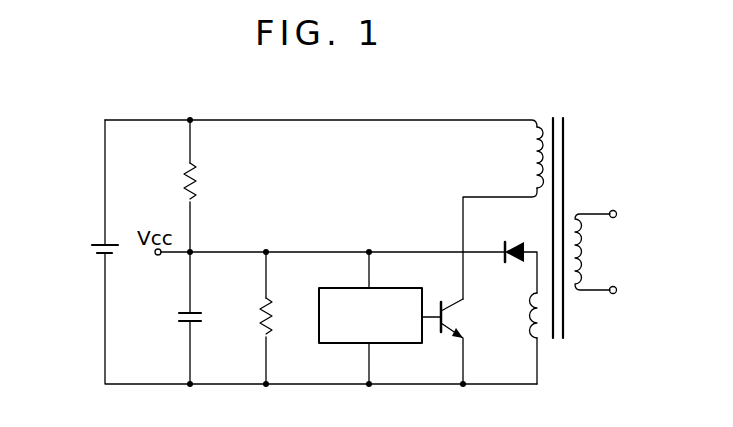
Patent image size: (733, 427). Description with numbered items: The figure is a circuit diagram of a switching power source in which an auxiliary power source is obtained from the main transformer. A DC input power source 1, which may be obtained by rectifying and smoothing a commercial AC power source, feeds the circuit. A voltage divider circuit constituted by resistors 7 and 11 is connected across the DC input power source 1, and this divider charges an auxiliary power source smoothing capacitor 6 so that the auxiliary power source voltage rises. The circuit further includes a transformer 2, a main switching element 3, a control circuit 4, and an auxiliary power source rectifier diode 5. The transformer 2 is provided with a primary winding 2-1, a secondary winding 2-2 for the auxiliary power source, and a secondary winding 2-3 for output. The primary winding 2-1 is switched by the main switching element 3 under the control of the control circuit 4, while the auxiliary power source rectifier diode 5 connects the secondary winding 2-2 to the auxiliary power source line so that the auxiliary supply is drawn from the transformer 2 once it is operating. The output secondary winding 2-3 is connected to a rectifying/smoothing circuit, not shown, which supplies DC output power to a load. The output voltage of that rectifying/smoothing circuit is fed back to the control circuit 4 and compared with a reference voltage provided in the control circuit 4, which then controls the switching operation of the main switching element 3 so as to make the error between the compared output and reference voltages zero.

The DC input power source 1 is at (93, 249).
The transformer 2 is at (560, 114).
The primary winding 2-1 is at (540, 116).
The secondary winding for the auxiliary power source 2-2 is at (541, 341).
The secondary winding for output 2-3 is at (583, 296).
The main switching element 3 is at (457, 318).
The control circuit 4 is at (402, 344).
The auxiliary power source rectifier diode 5 is at (514, 240).
The auxiliary power source smoothing capacitor 6 is at (202, 316).
The resistor 7 is at (199, 185).
The resistor 11 is at (277, 327).